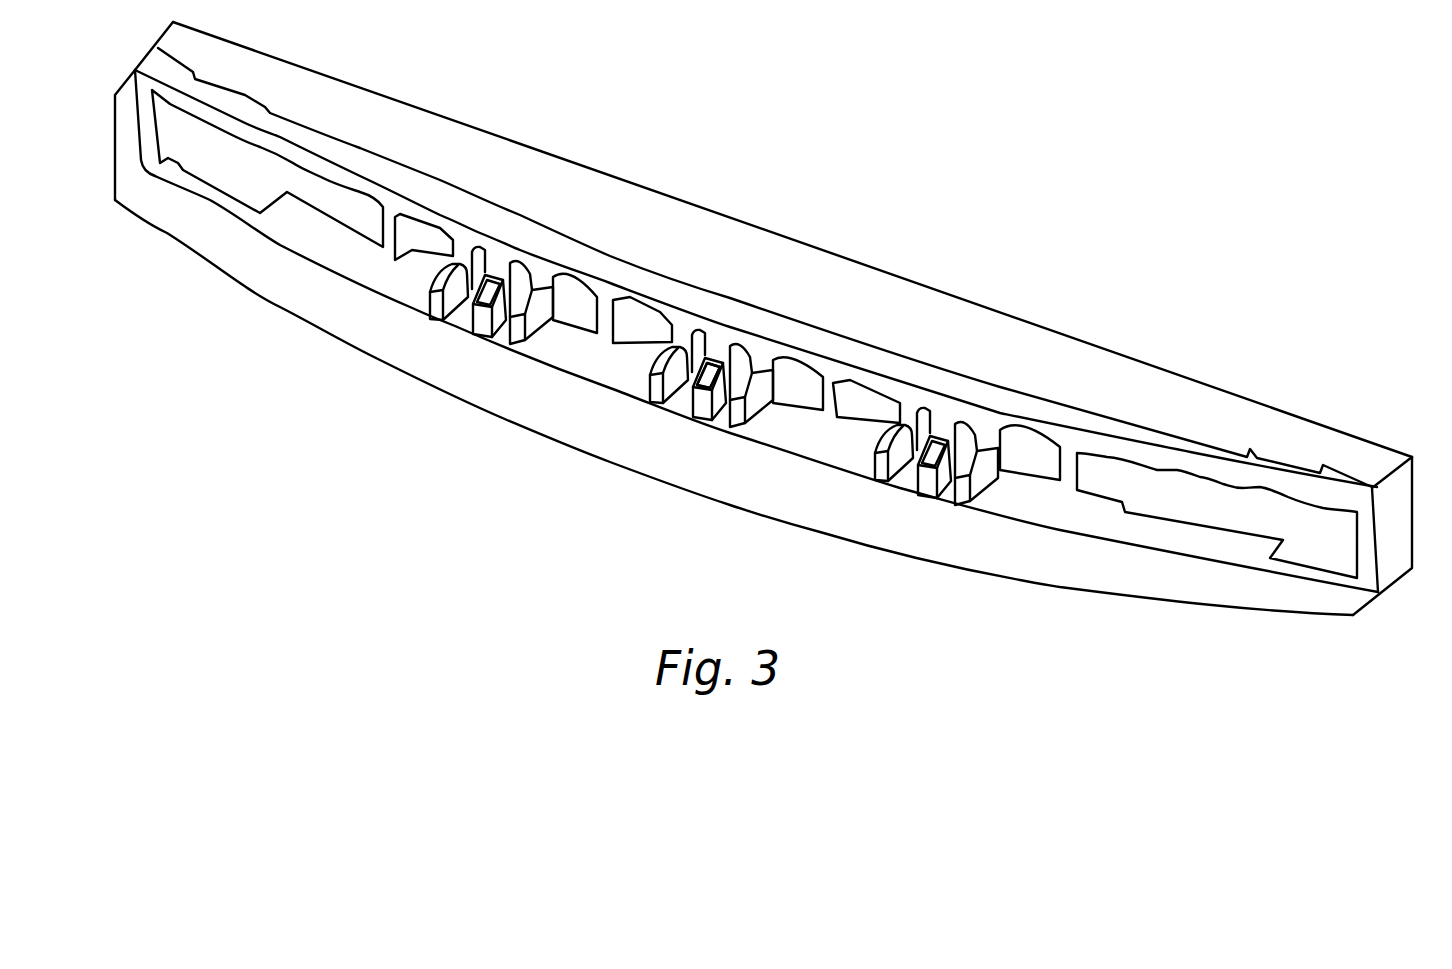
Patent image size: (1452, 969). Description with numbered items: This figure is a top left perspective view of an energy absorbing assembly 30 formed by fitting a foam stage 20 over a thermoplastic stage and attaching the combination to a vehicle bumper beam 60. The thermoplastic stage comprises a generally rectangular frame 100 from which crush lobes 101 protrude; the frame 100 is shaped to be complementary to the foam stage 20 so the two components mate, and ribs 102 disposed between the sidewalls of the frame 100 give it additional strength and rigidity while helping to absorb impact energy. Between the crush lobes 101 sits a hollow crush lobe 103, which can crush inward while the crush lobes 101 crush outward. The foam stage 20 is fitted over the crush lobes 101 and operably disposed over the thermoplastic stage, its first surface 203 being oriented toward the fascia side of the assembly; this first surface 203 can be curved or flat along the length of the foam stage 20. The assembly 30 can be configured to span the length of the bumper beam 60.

The foam stage 20 is at (503, 392).
The energy absorbing assembly 30 is at (224, 325).
The bumper beam 60 is at (618, 180).
The frame 100 is at (1103, 413).
The crush lobes 101 is at (737, 420).
The ribs 102 is at (397, 233).
The hollow crush lobe 103 is at (697, 405).
The first surface 203 is at (360, 297).